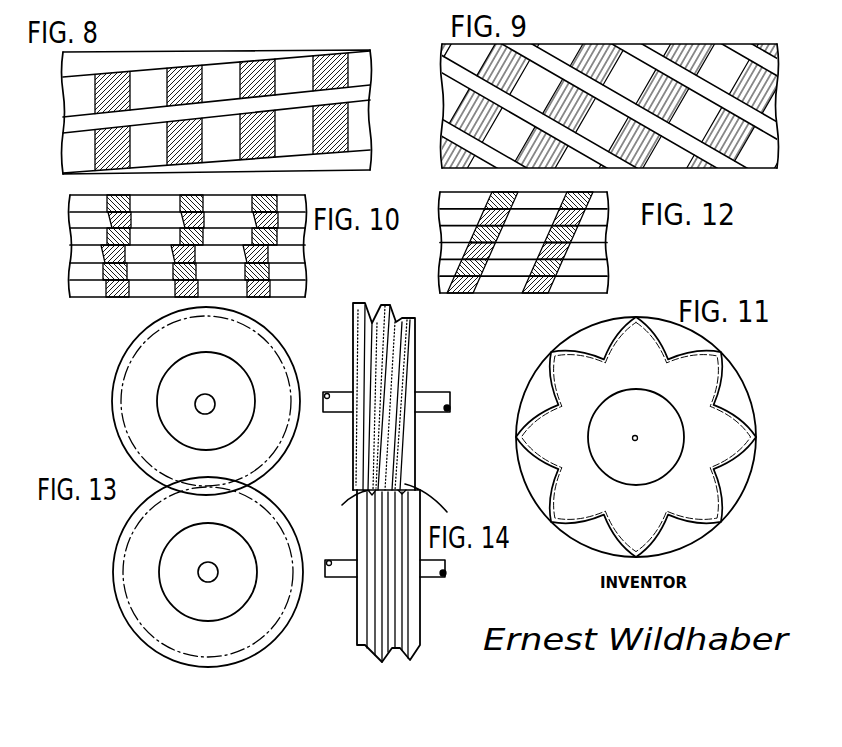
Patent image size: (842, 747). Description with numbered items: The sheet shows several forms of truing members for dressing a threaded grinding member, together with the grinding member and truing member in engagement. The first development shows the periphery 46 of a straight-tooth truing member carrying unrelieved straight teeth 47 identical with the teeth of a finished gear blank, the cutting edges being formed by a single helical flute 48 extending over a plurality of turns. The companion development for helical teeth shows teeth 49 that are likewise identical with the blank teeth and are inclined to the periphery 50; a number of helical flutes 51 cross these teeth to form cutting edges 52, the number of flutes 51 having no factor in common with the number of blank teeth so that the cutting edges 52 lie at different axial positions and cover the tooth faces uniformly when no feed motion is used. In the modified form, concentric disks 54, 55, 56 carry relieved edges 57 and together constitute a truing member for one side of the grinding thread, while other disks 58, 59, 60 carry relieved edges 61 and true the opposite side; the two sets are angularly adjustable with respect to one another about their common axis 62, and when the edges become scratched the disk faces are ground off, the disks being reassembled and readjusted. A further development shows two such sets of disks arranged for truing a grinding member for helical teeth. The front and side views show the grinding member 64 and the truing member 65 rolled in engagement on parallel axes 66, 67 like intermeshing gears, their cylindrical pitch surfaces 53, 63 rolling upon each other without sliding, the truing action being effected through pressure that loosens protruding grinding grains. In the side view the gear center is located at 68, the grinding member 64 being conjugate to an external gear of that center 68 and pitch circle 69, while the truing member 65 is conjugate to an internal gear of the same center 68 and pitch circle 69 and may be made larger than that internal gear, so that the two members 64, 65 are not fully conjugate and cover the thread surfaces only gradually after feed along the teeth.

In FIG. 8, the periphery 46 is at (176, 51).
In FIG. 8, the unrelieved straight teeth 47 is at (253, 70).
In FIG. 8, the helical flute 48 is at (98, 124).
In FIG. 9, the teeth 49 is at (581, 53).
In FIG. 9, the periphery 50 is at (700, 44).
In FIG. 9, the helical flutes 51 is at (640, 51).
In FIG. 9, the cutting edges 52 is at (478, 103).
In FIG. 13, the cylindrical pitch surface 53 is at (265, 463).
In FIG. 10, the concentric disk 54 is at (90, 290).
In FIG. 10, the concentric disk 55 is at (90, 272).
In FIG. 10, the concentric disk 56 is at (90, 253).
In FIG. 10, the relieved edges 57 is at (102, 298).
In FIG. 11, the relieved edges 57 is at (735, 410).
In FIG. 10, the disk 58 is at (90, 238).
In FIG. 10, the disk 59 is at (90, 222).
In FIG. 10, the disk 60 is at (90, 205).
In FIG. 10, the relieved edges 61 is at (133, 214).
In FIG. 11, the relieved edges 61 is at (735, 452).
In FIG. 11, the axis 62 is at (637, 436).
In FIG. 13, the cylindrical pitch surface 63 is at (273, 498).
In FIG. 13, the grinding member 64 is at (138, 392).
In FIG. 14, the grinding member 64 is at (412, 350).
In FIG. 13, the truing member 65 is at (138, 572).
In FIG. 14, the truing member 65 is at (397, 624).
In FIG. 13, the axis 66 is at (203, 407).
In FIG. 14, the axis 66 is at (433, 400).
In FIG. 13, the axis 67 is at (207, 575).
In FIG. 14, the axis 67 is at (352, 570).
In FIG. 14, the gear center 68 is at (392, 545).
In FIG. 14, the pitch circle 69 is at (420, 490).